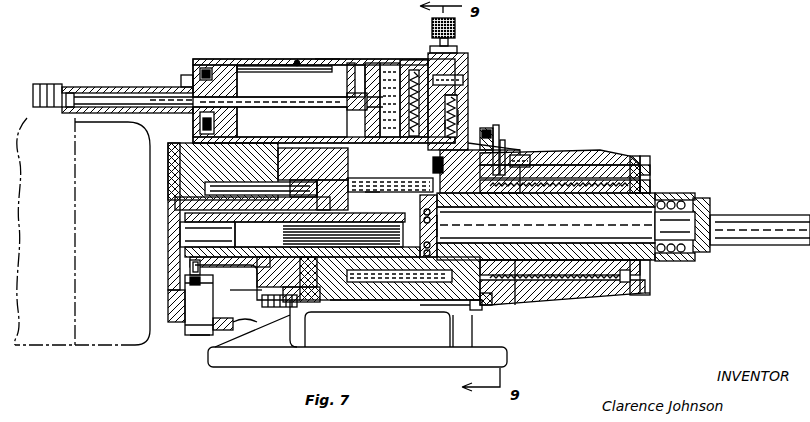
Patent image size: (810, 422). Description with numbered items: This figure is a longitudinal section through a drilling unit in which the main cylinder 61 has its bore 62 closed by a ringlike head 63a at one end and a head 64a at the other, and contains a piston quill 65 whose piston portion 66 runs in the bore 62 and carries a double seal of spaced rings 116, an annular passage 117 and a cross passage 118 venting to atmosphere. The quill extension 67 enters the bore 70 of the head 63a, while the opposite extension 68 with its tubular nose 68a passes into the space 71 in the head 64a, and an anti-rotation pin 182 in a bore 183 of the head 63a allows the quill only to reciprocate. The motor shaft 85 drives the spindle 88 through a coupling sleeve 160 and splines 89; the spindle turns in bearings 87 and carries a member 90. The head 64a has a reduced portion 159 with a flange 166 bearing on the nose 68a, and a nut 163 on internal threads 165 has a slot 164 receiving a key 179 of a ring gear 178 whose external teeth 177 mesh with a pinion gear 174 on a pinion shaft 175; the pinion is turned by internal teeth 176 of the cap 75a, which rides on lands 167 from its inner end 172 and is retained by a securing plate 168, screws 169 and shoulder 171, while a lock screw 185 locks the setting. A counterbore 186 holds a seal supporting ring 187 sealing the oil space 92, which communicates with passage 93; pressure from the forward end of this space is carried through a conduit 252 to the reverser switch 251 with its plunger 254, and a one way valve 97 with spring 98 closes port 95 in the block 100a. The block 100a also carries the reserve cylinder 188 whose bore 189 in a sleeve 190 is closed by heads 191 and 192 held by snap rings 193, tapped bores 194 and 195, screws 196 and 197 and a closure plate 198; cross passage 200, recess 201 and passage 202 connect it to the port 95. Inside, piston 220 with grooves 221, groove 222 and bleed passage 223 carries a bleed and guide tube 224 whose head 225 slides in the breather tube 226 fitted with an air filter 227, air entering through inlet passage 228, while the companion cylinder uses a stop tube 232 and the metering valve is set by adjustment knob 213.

The main cylinder 61 is at (475, 313).
The bore 62 is at (392, 288).
The ringlike head 63a is at (173, 317).
The head 64a is at (490, 300).
The piston quill 65 is at (442, 256).
The piston portion 66 is at (373, 290).
The piston quill extension 67 is at (260, 272).
The piston quill extension 68 is at (470, 248).
The tubular nose 68a is at (651, 261).
The bore 70 is at (192, 260).
The space 71 is at (572, 307).
The cap 75a is at (592, 150).
The motor shaft 85 is at (182, 230).
The bearings 87 is at (427, 213).
The drill shaft or spindle 88 is at (546, 226).
The spindle splines 89 is at (330, 185).
The member 90 is at (750, 215).
The oil space 92 is at (368, 193).
The passage 93 is at (485, 130).
The port 95 is at (465, 112).
The one way valve 97 is at (466, 122).
The spring 98 is at (443, 165).
The block 100a is at (467, 63).
The seal rings 116 is at (312, 283).
The annular passage 117 is at (312, 300).
The cross passage 118 is at (348, 256).
The reduced axially extending annular portion 159 is at (540, 290).
The coupling sleeve 160 is at (180, 245).
The nut 163 is at (620, 300).
The slot 164 is at (636, 156).
The internal threads 165 is at (597, 303).
The annular flange 166 is at (652, 182).
The annular lands 167 is at (555, 168).
The removable securing plate 168 is at (648, 292).
The screws 169 is at (645, 280).
The internal axially facing shoulder 171 is at (645, 168).
The inner end 172 is at (545, 170).
The pinion gear 174 is at (532, 152).
The pinion shaft 175 is at (502, 150).
The internal gear teeth 176 is at (518, 280).
The external teeth 177 is at (525, 275).
The ring gear 178 is at (500, 280).
The connector bar or key 179 is at (585, 155).
The anti-rotation locking pin or key 182 is at (273, 178).
The bore 183 is at (170, 183).
The lock screw 185 is at (500, 150).
The counter bore 186 is at (357, 333).
The closure seal supporting ring 187 is at (472, 347).
The cylinder 188 is at (248, 50).
The bore 189 is at (297, 62).
The sleeve member 190 is at (320, 59).
The closure head 191 is at (214, 70).
The closure head 192 is at (395, 67).
The snap rings 193 is at (200, 72).
The tapped bores 194 is at (378, 63).
The tapped bores 195 is at (238, 80).
The mounting screws 196 is at (467, 53).
The mounting screws 197 is at (193, 62).
The closure plate 198 is at (200, 64).
The cross passage 200 is at (465, 95).
The annular recess 201 is at (468, 78).
The through passage 202 is at (410, 143).
The adjustment knob 213 is at (455, 32).
The piston 220 is at (350, 112).
The annular grooves 221 is at (347, 141).
The intermediate shallow annular groove 222 is at (270, 117).
The radial bleed passage 223 is at (347, 75).
The combined bleed and guide tube 224 is at (290, 65).
The annularly grooved head 225 is at (137, 86).
The breather tube 226 is at (118, 85).
The air filter 227 is at (63, 113).
The air inlet passage 228 is at (200, 132).
The combined breather and piston stop tube 232 is at (48, 84).
The automatic reverser switch 251 is at (193, 343).
The conduit 252 is at (230, 323).
The switch plunger 254 is at (184, 268).